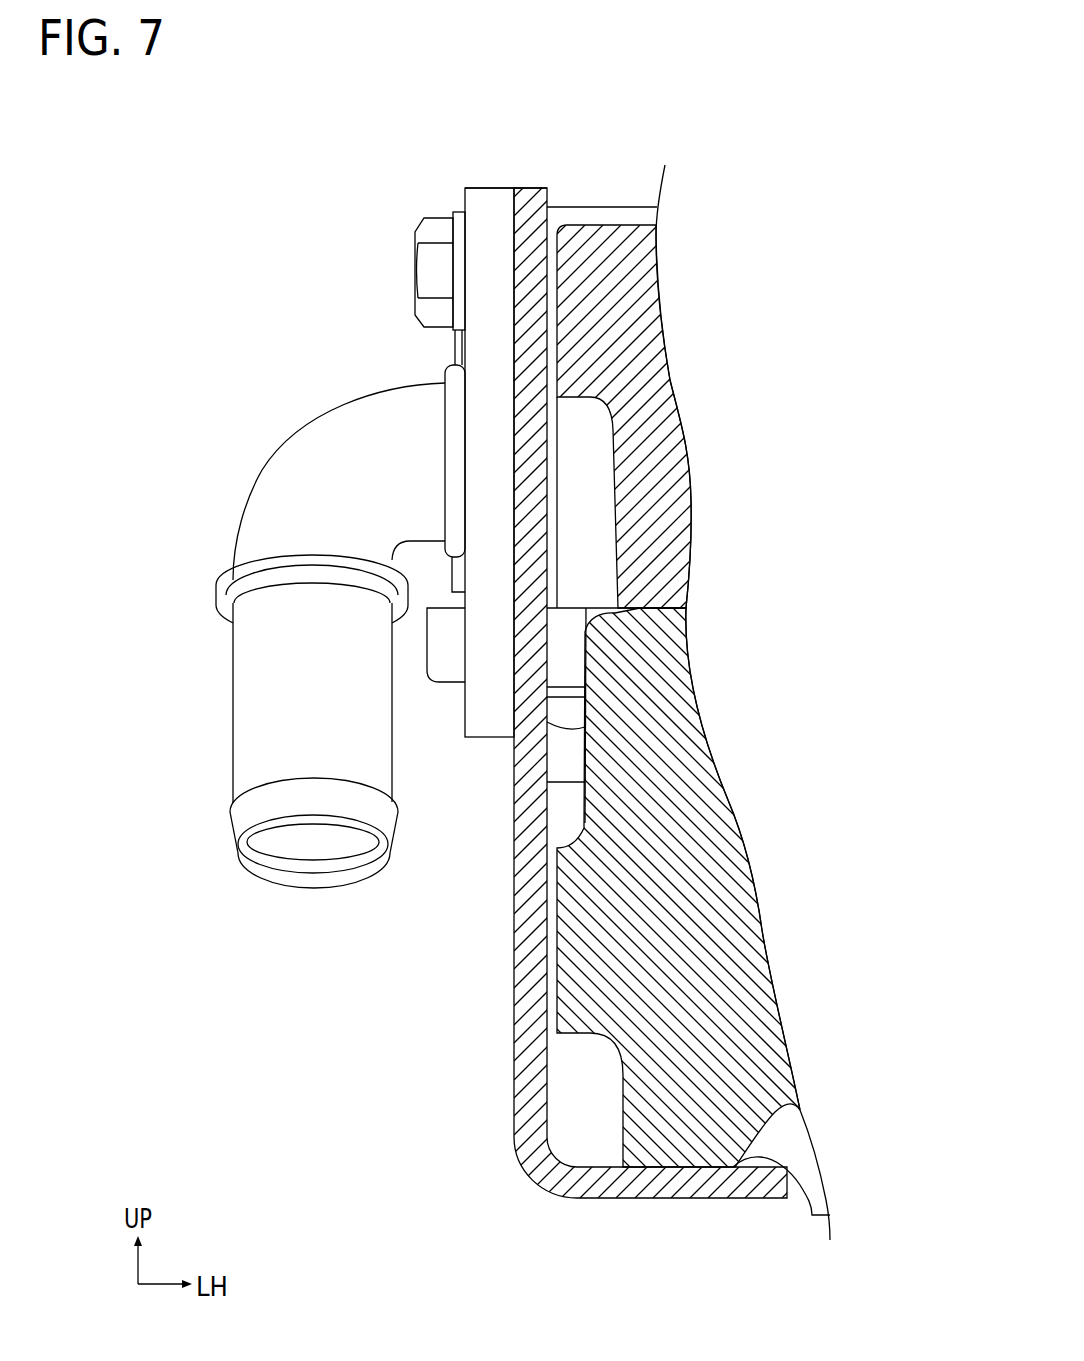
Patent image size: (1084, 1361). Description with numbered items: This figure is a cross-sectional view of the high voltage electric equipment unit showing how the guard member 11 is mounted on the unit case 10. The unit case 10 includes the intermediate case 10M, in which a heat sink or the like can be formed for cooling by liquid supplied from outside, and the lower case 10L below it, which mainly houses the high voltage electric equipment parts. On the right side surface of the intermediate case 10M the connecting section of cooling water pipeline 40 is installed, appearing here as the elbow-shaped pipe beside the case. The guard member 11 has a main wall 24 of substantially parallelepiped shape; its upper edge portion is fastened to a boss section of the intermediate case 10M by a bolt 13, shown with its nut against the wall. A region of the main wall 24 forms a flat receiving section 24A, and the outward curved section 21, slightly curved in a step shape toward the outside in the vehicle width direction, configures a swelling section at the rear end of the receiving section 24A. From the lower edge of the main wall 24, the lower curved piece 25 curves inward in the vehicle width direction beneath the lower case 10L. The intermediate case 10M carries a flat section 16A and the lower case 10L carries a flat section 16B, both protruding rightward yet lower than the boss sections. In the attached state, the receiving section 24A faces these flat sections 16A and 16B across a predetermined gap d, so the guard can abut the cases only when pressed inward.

The guard member 11 is at (502, 182).
The outward curved section 21 is at (485, 272).
The bolt 13 is at (414, 262).
The connecting section of cooling water pipeline 40 is at (300, 452).
The main wall 24 is at (582, 693).
The receiving section 24A is at (514, 842).
The unit case 10 is at (688, 709).
The intermediate case 10M is at (600, 222).
The lower case 10L is at (644, 1172).
The flat section 16A is at (557, 310).
The flat section 16B is at (556, 921).
The lower curved piece 25 is at (703, 1199).
The gap d is at (549, 254).